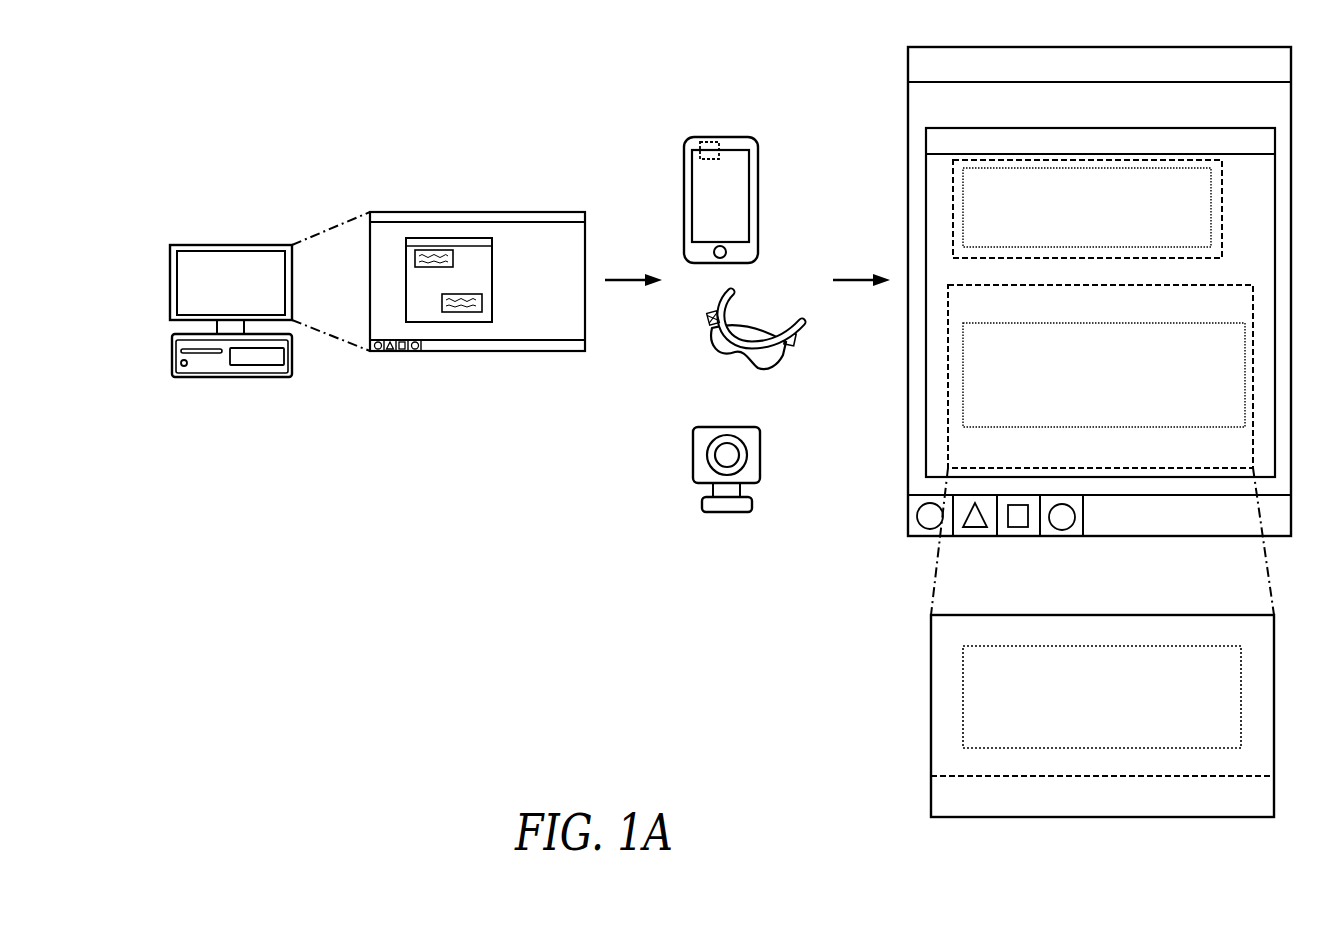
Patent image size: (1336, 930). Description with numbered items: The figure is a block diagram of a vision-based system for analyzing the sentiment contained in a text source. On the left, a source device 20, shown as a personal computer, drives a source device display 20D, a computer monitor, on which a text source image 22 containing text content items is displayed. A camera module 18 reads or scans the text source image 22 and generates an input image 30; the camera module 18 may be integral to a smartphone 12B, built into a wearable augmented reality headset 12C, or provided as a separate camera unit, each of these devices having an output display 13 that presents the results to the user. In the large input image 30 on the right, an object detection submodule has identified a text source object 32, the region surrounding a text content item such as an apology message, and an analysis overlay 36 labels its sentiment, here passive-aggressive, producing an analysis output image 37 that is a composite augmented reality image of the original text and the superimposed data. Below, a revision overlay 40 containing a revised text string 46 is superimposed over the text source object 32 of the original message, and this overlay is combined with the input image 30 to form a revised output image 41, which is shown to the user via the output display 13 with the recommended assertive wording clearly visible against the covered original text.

The smartphone 12B is at (758, 200).
The augmented reality headset 12C is at (738, 292).
The output display 13 is at (707, 172).
The camera module 18 is at (708, 142).
The source device 20 is at (215, 245).
The source device display 20D is at (178, 292).
The text source image 22 is at (398, 212).
The input image 30 is at (953, 47).
The text source object 32 is at (962, 192).
The analysis overlay 36 is at (1013, 303).
The analysis output image 37 is at (927, 63).
The revision overlay 40 is at (963, 665).
The revised output image 41 is at (931, 732).
The revised text string 46 is at (977, 693).